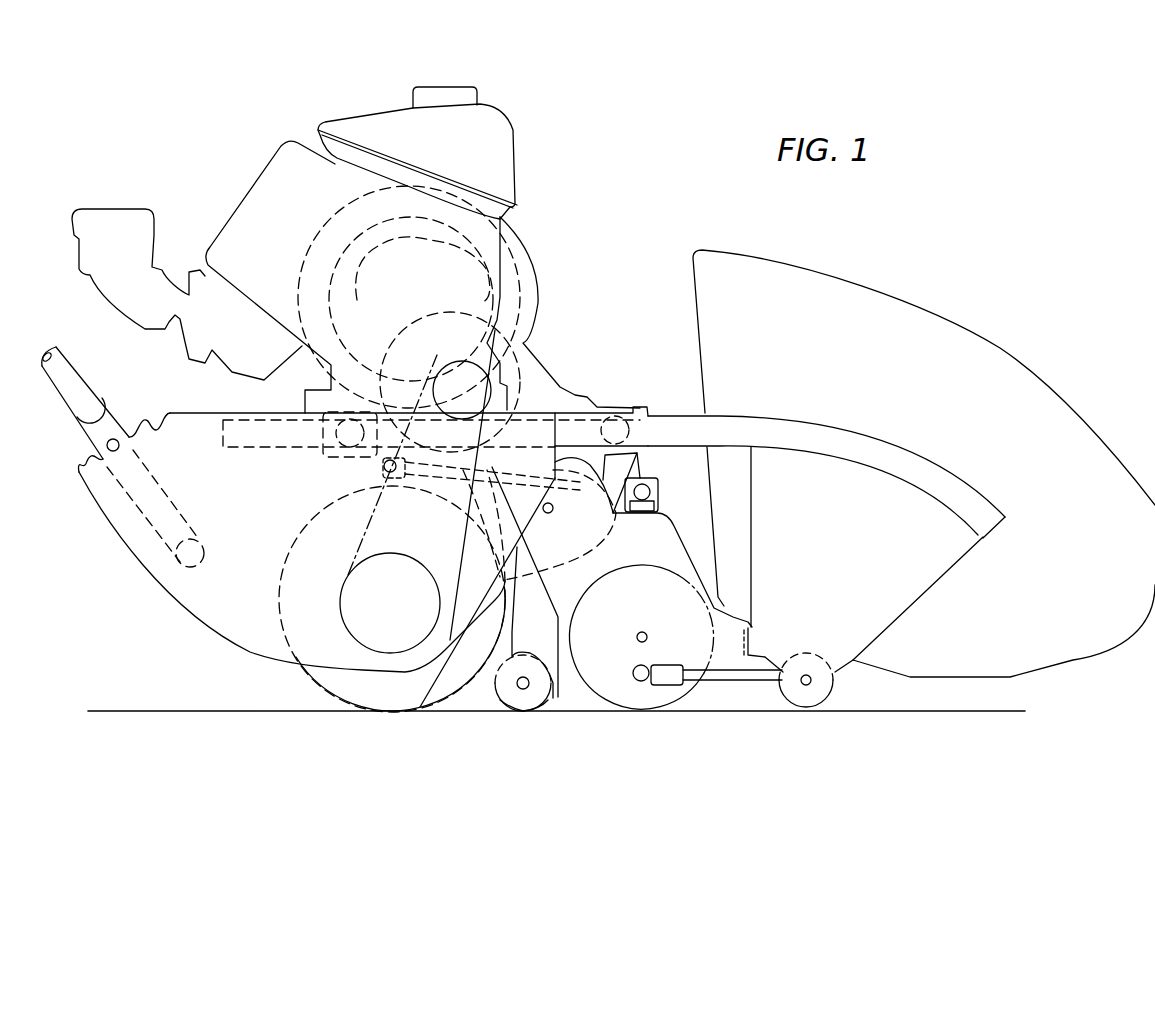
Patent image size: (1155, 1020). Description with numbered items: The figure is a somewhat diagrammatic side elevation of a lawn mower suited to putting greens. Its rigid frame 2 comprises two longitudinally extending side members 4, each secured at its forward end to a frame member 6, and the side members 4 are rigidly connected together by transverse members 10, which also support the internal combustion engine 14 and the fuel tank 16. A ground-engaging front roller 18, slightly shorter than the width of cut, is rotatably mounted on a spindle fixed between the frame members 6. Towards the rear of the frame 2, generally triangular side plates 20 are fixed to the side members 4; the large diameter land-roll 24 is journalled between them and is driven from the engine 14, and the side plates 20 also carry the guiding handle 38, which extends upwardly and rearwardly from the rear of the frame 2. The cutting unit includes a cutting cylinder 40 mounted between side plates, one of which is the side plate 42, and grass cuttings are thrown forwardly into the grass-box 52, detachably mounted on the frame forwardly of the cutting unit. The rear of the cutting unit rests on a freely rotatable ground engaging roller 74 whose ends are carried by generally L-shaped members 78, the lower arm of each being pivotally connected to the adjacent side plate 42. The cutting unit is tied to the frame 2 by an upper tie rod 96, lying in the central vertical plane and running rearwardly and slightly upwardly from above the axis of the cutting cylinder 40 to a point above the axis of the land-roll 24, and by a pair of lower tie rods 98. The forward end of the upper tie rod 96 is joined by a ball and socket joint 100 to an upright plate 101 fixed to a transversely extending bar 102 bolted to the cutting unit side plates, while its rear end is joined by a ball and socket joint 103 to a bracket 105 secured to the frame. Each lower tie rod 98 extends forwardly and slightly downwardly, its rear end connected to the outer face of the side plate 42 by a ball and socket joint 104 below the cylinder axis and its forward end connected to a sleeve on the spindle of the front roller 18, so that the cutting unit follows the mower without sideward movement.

The rigid frame 2 is at (665, 422).
The side members 4 is at (797, 427).
The frame member 6 is at (933, 565).
The transverse members 10 is at (342, 437).
The internal combustion engine 14 is at (252, 180).
The fuel tank 16 is at (498, 132).
The front roller 18 is at (832, 698).
The side plates 20 is at (193, 593).
The land-roll 24 is at (305, 668).
The guiding handle 38 is at (70, 378).
The cutting cylinder 40 is at (594, 700).
The side plate 42 is at (675, 566).
The grass-box 52 is at (1045, 410).
The ground engaging roller 74 is at (508, 703).
The L-shaped members 78 is at (528, 695).
The upper tie rod 96 is at (577, 487).
The lower tie rod 98 is at (727, 682).
The ball and socket joint 100 is at (648, 487).
The upright plate 101 is at (638, 511).
The transversely extending bar 102 is at (658, 505).
The ball and socket joint 103 is at (382, 467).
The ball and socket joint 104 is at (640, 681).
The bracket 105 is at (385, 487).